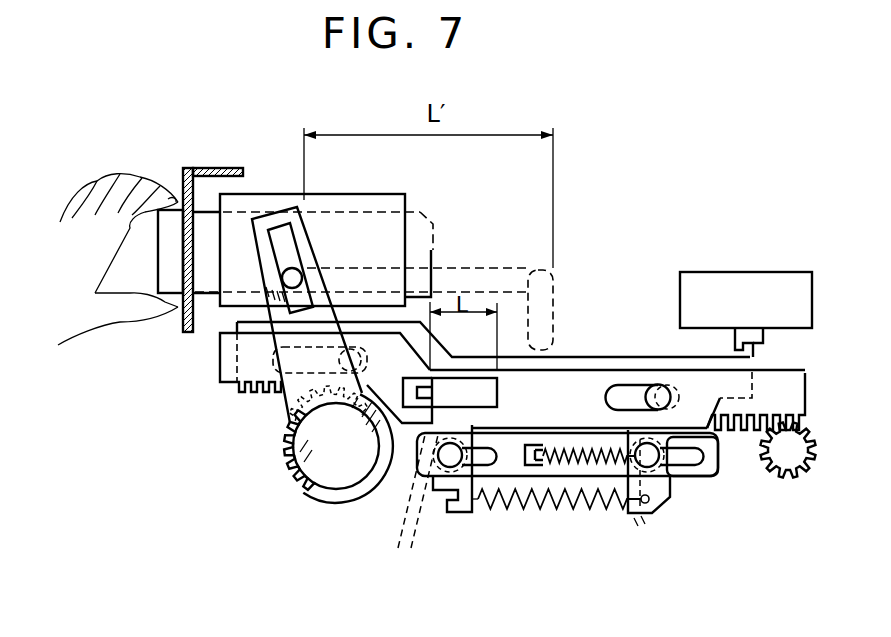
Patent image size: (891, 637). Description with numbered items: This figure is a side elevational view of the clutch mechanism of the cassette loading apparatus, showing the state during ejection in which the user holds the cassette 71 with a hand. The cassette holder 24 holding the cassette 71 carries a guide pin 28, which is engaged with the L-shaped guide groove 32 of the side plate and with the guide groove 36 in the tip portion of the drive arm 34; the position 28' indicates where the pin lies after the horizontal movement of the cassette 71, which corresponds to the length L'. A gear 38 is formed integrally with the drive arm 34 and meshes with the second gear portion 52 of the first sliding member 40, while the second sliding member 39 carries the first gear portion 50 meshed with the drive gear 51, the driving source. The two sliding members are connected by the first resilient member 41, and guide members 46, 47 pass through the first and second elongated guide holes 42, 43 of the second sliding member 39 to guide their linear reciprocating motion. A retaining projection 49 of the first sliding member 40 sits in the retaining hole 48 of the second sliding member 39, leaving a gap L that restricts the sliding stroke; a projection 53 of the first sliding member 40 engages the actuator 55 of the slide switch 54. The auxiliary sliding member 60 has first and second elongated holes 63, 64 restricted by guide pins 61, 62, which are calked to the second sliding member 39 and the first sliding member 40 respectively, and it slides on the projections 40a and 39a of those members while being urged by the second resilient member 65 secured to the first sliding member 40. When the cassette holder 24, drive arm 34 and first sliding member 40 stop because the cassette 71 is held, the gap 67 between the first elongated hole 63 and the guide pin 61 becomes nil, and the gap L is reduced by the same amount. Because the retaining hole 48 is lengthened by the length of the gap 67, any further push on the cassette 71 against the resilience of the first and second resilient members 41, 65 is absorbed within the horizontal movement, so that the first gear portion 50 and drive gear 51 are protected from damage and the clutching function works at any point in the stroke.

The cassette holder 24 is at (381, 208).
The guide pin 28 is at (324, 220).
The guide pin in shifted position 28' is at (570, 296).
The L-shaped guide groove 32 is at (457, 280).
The drive arm 34 is at (262, 265).
The guide groove 36 is at (284, 232).
The gear 38 is at (296, 475).
The second sliding member 39 is at (222, 358).
The projection 39a is at (402, 550).
The first sliding member 40 is at (608, 365).
The projection 40a is at (640, 524).
The first resilient member 41 is at (552, 505).
The first elongated guide hole 42 is at (287, 407).
The second elongated guide hole 43 is at (630, 392).
The guide member 46 is at (342, 405).
The guide member 47 is at (660, 394).
The retaining hole 48 is at (483, 397).
The retaining projection 49 is at (425, 410).
The first gear portion 50 is at (778, 419).
The drive gear 51 is at (817, 452).
The second gear portion 52 is at (255, 392).
The projection 53 is at (758, 366).
The slide switch 54 is at (745, 297).
The actuator 55 is at (766, 342).
The auxiliary sliding member 60 is at (715, 465).
The guide pin 61 is at (480, 467).
The guide pin 62 is at (660, 470).
The first elongated hole 63 is at (500, 455).
The second elongated hole 64 is at (700, 462).
The second resilient member 65 is at (578, 470).
The gap 67 is at (448, 468).
The cassette 71 is at (425, 233).